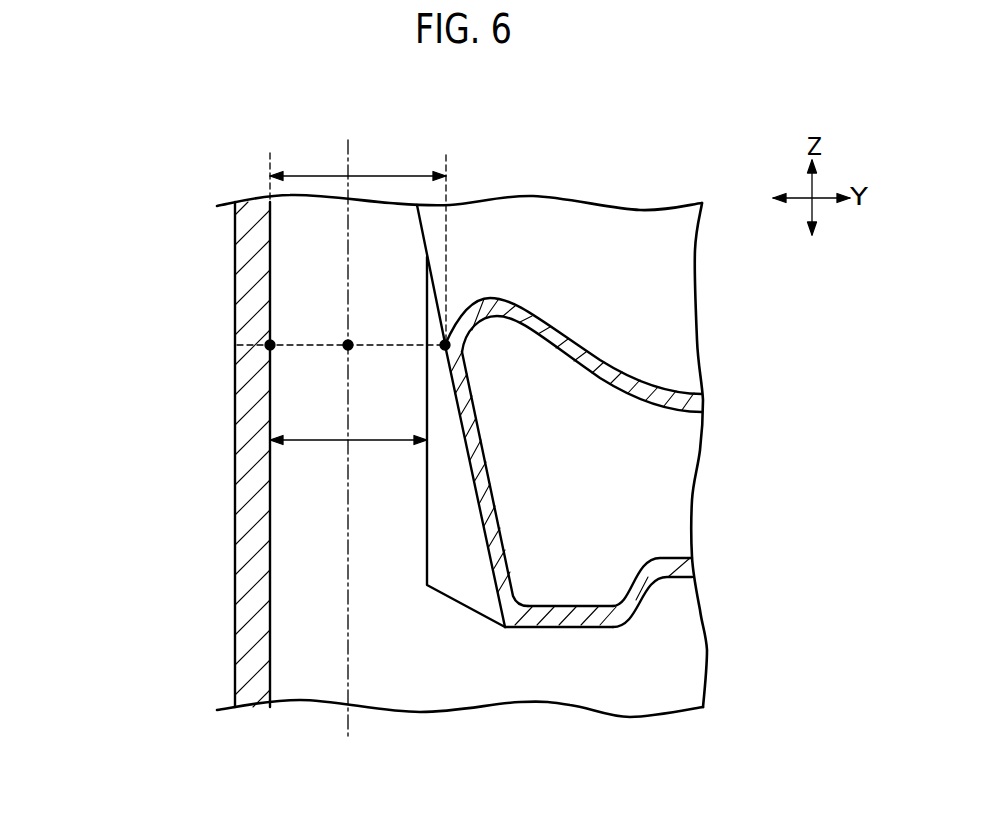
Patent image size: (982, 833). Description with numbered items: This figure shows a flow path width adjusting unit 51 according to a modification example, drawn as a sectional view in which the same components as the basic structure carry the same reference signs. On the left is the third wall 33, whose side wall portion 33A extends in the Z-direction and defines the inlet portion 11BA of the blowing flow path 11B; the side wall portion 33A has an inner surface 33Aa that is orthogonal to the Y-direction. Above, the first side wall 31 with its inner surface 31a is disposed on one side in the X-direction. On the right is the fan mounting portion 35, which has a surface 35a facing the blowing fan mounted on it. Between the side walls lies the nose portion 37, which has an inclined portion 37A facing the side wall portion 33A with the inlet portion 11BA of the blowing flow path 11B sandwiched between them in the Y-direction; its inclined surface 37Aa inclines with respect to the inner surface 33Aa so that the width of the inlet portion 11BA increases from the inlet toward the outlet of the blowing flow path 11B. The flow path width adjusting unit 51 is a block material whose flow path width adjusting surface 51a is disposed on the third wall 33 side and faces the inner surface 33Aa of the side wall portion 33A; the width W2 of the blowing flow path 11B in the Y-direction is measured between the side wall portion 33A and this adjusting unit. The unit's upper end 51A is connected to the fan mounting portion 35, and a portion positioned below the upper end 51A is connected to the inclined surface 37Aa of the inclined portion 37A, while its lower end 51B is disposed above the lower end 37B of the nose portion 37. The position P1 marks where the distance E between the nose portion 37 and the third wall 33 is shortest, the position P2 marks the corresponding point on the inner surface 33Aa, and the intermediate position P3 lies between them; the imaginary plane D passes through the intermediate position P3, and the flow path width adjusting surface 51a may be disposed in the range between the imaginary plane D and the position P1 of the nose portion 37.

The first side wall 31 is at (363, 233).
The inner surface 31a is at (330, 237).
The upper end 51A is at (427, 320).
The intermediate position P3 is at (348, 345).
The position P2 is at (237, 345).
The position P1 is at (445, 343).
The inner surface 33Aa is at (247, 393).
The side wall portion 33A is at (274, 393).
The width W2 is at (327, 438).
The inlet portion 11BA is at (327, 470).
The blowing flow path 11B is at (91, 531).
The flow path width adjusting surface 51a is at (427, 480).
The third wall 33 is at (235, 593).
The flow path width adjusting unit 51 is at (427, 517).
The lower end 51B is at (497, 608).
The lower end 37B is at (572, 627).
The fan mounting portion 35 is at (684, 209).
The surface 35a is at (638, 300).
The nose portion 37 is at (647, 369).
The inclined portion 37A is at (478, 418).
The inclined surface 37Aa is at (480, 513).
The imaginary plane D is at (348, 152).
The distance E is at (385, 175).